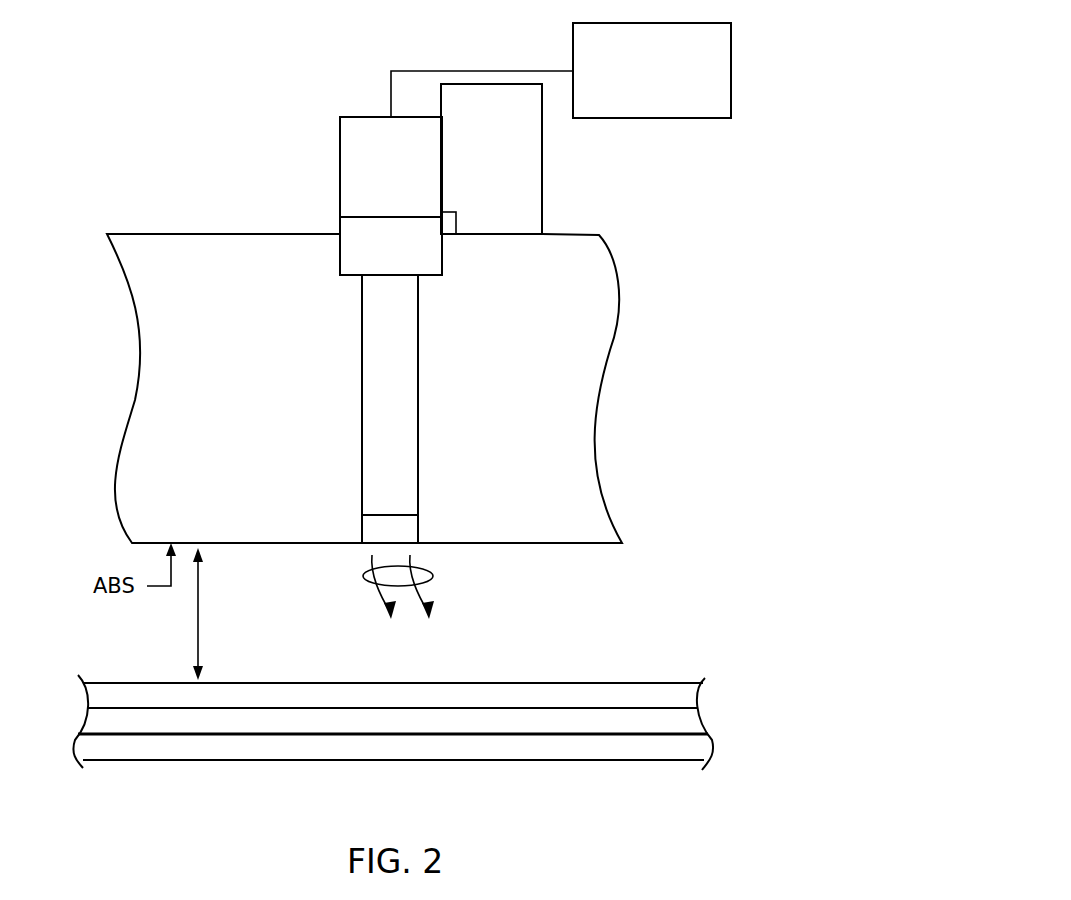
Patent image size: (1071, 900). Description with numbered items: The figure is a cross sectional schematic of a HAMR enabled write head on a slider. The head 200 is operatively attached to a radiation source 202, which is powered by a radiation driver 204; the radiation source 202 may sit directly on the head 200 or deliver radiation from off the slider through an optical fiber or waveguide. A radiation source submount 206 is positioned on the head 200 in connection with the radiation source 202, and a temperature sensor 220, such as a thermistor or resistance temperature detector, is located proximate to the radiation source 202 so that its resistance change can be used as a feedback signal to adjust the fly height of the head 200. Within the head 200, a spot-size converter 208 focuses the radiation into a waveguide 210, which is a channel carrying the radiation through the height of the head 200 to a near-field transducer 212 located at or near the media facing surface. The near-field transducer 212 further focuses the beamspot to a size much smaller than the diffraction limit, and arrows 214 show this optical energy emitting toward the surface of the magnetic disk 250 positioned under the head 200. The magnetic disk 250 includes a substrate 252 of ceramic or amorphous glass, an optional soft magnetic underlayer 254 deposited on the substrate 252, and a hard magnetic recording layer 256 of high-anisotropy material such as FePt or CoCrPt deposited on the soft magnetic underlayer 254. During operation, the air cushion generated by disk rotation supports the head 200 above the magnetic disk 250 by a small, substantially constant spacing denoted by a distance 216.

The head 200 is at (173, 192).
The radiation source 202 is at (340, 170).
The radiation driver 204 is at (731, 72).
The radiation source submount 206 is at (542, 178).
The spot-size converter 208 is at (340, 225).
The waveguide 210 is at (362, 368).
The near-field transducer 212 is at (362, 530).
The arrows 214 is at (366, 575).
The distance 216 is at (199, 598).
The temperature sensor 220 is at (450, 236).
The magnetic disk 250 is at (435, 696).
The substrate 252 is at (700, 745).
The soft magnetic underlayer 254 is at (692, 718).
The hard magnetic recording layer 256 is at (692, 697).